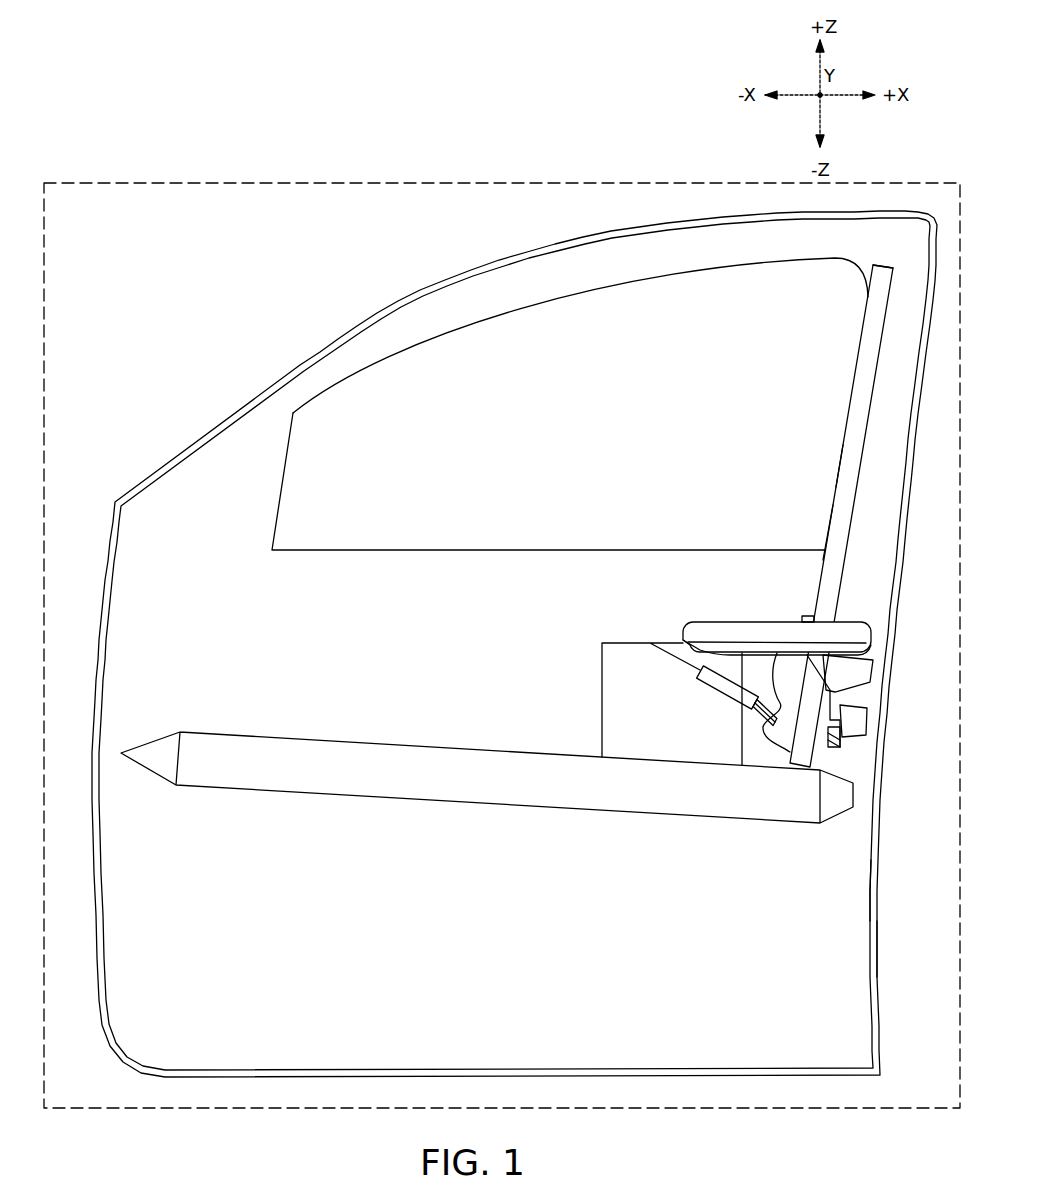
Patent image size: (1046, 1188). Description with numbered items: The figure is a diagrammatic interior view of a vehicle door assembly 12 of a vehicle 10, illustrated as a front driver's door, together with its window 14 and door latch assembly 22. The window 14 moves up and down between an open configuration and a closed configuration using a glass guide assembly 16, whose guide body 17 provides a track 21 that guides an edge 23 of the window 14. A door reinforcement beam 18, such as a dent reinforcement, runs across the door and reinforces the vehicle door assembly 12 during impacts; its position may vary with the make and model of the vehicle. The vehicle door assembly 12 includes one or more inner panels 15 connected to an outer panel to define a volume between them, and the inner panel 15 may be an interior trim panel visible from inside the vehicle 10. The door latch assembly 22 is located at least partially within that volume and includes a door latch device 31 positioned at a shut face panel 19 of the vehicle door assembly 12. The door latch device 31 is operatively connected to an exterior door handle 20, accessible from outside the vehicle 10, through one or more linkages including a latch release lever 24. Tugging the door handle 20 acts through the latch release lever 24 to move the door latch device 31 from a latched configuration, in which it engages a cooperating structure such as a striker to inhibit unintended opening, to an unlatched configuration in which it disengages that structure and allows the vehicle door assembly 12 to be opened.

The vehicle 10 is at (178, 172).
The vehicle door assembly 12 is at (170, 422).
The window 14 is at (395, 365).
The inner panel 15 is at (858, 893).
The glass guide assembly 16 is at (838, 437).
The guide body 17 is at (838, 476).
The door reinforcement beam 18 is at (467, 790).
The shut face panel 19 is at (875, 940).
The exterior door handle 20 is at (757, 630).
The track 21 is at (823, 530).
The door latch assembly 22 is at (877, 653).
The edge of the window 23 is at (860, 315).
The latch release lever 24 is at (848, 692).
The door latch device 31 is at (867, 708).